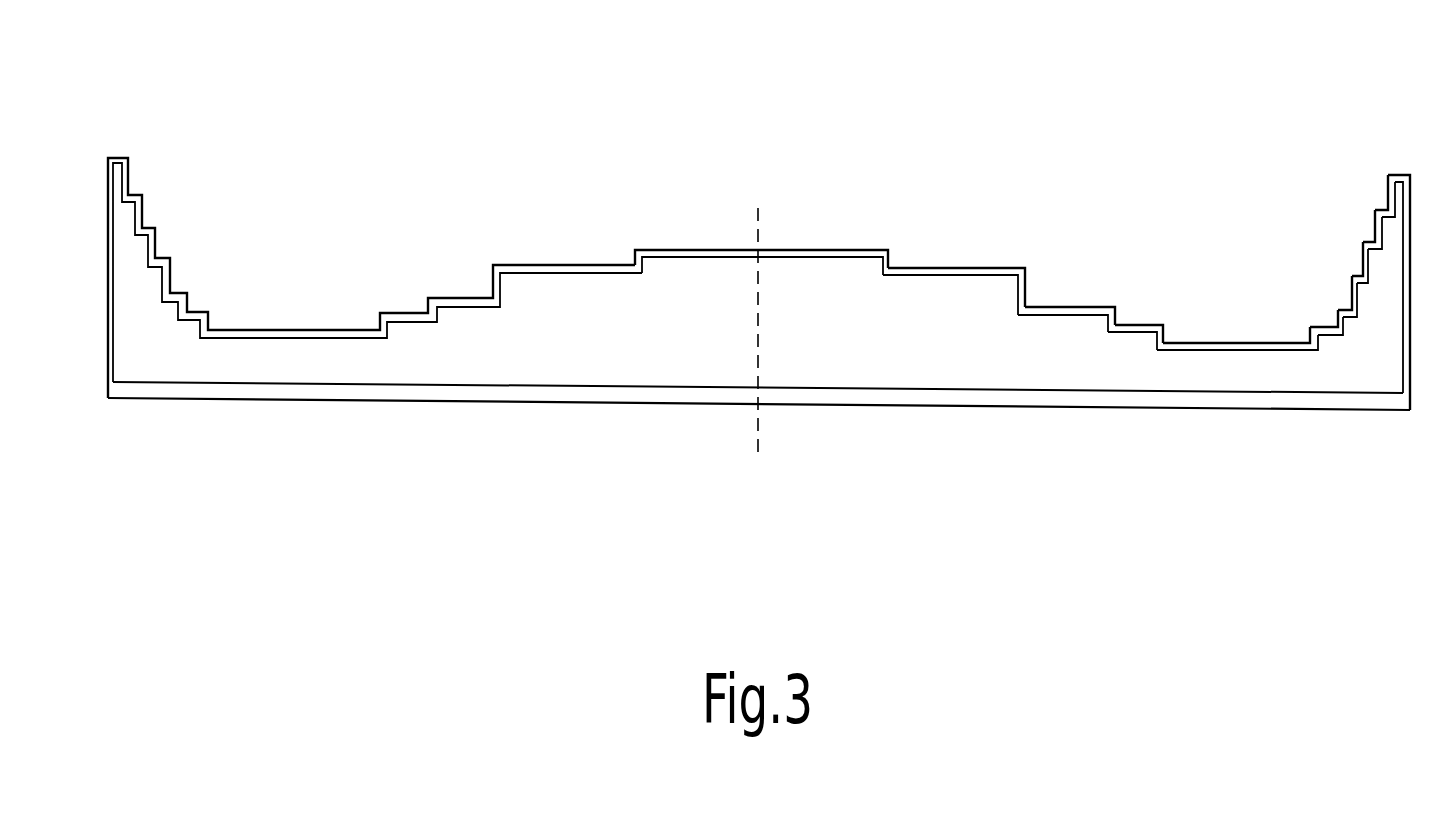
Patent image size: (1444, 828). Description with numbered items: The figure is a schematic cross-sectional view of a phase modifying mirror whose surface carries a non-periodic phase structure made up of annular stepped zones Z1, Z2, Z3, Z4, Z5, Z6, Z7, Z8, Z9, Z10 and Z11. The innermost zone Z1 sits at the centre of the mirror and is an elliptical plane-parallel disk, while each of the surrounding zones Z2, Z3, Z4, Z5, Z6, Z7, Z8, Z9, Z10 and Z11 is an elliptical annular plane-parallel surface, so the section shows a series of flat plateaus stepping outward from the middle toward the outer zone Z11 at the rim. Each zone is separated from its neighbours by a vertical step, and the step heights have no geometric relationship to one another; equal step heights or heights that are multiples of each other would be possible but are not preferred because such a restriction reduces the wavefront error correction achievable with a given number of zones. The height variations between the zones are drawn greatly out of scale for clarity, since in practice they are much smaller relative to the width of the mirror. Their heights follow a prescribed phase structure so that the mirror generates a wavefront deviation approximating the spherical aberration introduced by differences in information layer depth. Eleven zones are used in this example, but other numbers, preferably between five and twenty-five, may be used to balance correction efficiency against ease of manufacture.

The innermost zone Z1 is at (787, 250).
The stepped zone Z2 is at (960, 268).
The stepped zone Z3 is at (1071, 307).
The stepped zone Z4 is at (1138, 325).
The stepped zone Z5 is at (1192, 343).
The stepped zone Z6 is at (1323, 327).
The stepped zone Z7 is at (1347, 310).
The stepped zone Z8 is at (1357, 276).
The stepped zone Z9 is at (1372, 242).
The stepped zone Z10 is at (1383, 210).
The outermost stepped zone Z11 is at (1402, 175).